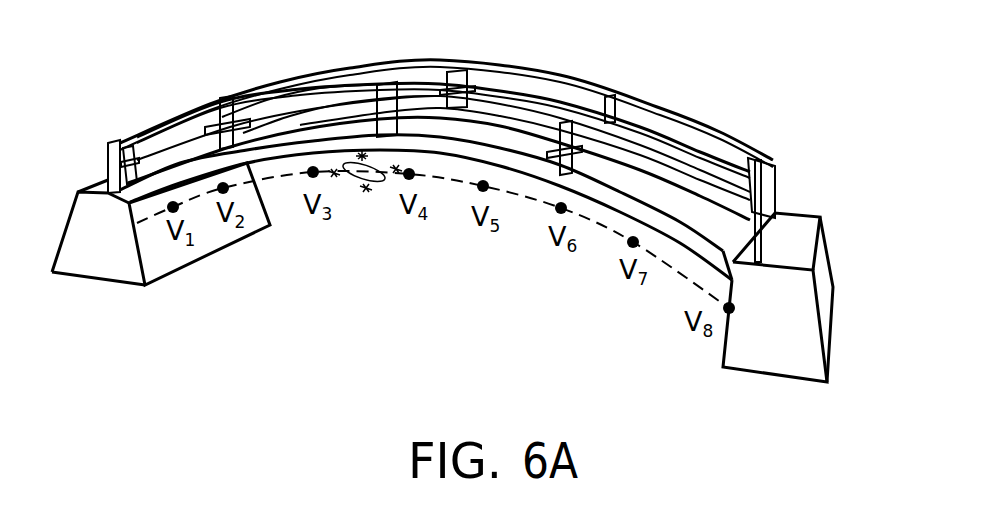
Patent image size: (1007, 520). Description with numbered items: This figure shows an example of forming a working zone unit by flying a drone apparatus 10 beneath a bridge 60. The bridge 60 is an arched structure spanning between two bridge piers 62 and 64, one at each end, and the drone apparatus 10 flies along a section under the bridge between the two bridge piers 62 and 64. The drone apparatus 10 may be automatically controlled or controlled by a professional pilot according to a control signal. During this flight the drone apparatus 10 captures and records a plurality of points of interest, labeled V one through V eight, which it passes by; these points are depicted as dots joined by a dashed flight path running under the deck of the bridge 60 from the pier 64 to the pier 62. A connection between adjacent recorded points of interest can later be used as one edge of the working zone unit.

The bridge 60 is at (612, 92).
The bridge pier 62 is at (780, 353).
The bridge pier 64 is at (105, 267).
The drone apparatus 10 is at (370, 182).